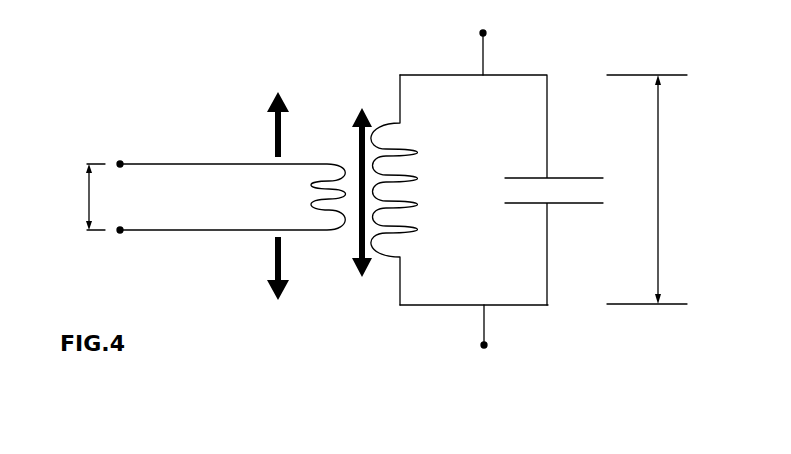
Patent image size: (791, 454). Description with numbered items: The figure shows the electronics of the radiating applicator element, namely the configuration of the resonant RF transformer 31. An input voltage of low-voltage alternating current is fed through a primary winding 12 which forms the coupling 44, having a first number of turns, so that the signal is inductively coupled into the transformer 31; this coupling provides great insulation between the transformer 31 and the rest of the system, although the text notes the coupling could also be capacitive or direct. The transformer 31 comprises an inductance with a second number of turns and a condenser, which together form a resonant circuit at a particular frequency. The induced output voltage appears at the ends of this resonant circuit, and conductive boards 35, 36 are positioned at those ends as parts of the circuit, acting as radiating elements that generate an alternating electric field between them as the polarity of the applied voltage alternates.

The primary coil 12 is at (215, 219).
The resonant RF transformer 31 is at (364, 76).
The conductive board 35 is at (562, 88).
The conductive board 36 is at (560, 297).
The coupling 44 is at (329, 272).